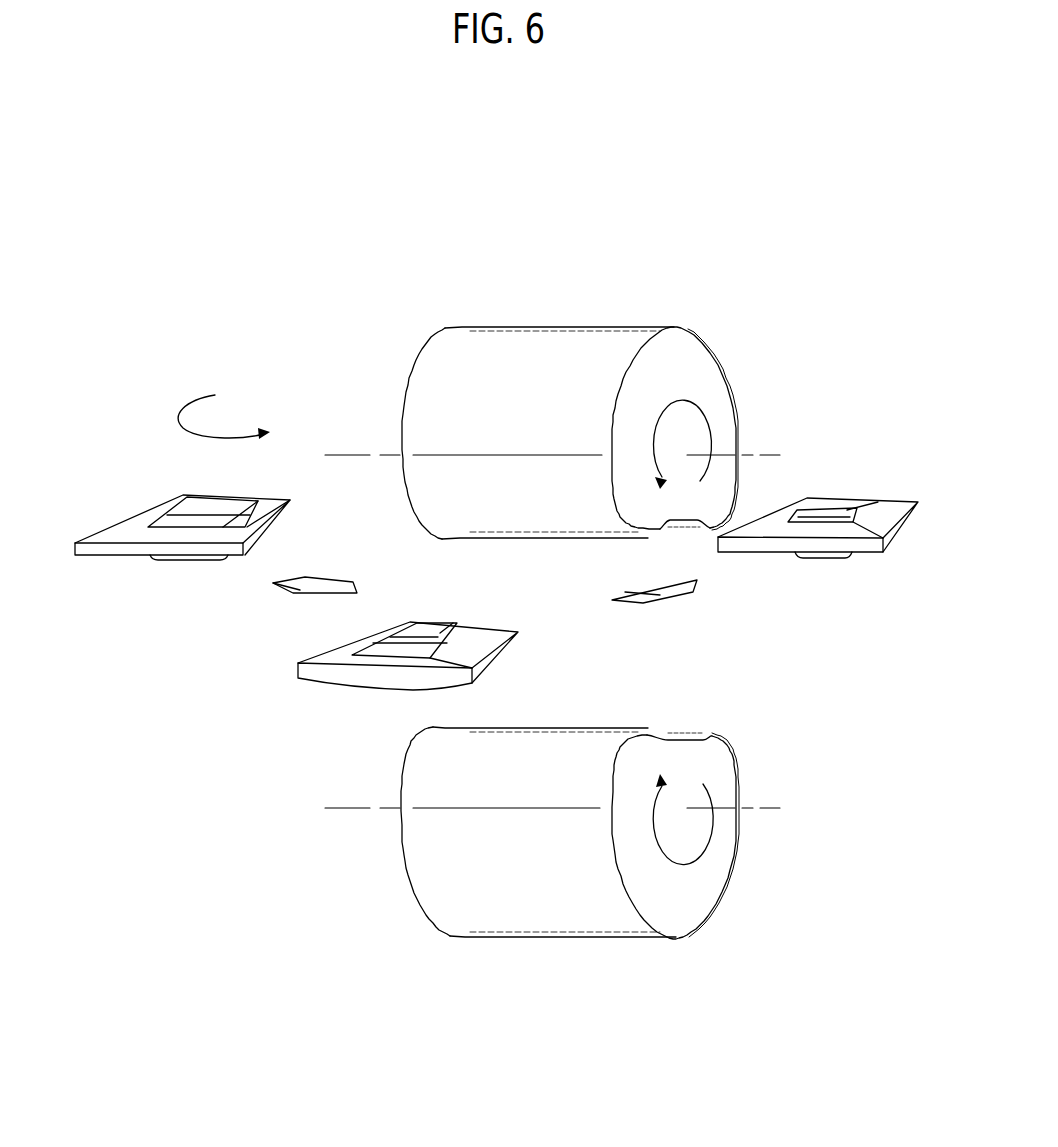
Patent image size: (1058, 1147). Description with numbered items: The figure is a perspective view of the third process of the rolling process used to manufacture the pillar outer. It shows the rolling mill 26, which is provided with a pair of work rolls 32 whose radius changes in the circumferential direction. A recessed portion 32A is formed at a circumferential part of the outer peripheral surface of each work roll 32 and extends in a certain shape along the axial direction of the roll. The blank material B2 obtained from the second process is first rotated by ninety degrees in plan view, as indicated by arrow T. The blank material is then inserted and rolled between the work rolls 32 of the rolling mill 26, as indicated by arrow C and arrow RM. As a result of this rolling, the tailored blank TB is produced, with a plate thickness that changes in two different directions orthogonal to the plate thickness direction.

The rolling mill 26 is at (702, 292).
The work roll 32 is at (726, 363).
The recessed portion 32A is at (683, 523).
The blank material B2 is at (133, 550).
The tailored blank TB is at (883, 512).
The arrow C is at (290, 590).
The arrow RM is at (657, 600).
The arrow T is at (195, 397).